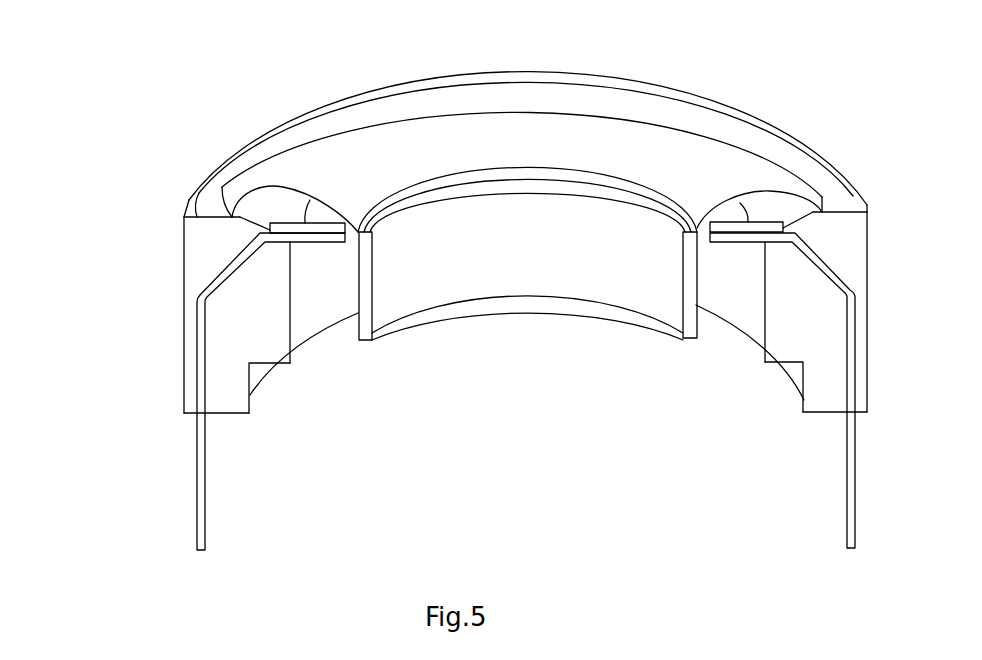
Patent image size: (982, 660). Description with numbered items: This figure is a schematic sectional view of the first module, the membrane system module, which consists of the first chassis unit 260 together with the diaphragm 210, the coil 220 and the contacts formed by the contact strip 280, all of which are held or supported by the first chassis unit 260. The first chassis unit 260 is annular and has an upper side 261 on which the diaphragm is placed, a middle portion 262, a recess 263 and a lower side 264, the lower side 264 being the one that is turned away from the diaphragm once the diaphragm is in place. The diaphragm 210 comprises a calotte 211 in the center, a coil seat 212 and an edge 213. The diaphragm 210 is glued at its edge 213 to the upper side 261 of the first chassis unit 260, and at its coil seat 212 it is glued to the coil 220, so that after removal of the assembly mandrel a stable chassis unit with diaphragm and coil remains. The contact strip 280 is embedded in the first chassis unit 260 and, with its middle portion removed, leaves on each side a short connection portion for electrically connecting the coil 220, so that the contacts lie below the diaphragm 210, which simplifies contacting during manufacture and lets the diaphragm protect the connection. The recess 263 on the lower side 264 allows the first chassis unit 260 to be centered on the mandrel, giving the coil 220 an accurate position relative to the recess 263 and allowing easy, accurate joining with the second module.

The diaphragm 210 is at (680, 157).
The calotte 211 is at (517, 160).
The coil seat 212 is at (368, 225).
The edge 213 is at (212, 162).
The coil 220 is at (700, 313).
The first chassis unit 260 is at (183, 263).
The upper side 261 is at (187, 200).
The middle portion 262 is at (290, 315).
The recess 263 is at (263, 370).
The lower side 264 is at (223, 418).
The contact strip 280 is at (852, 480).